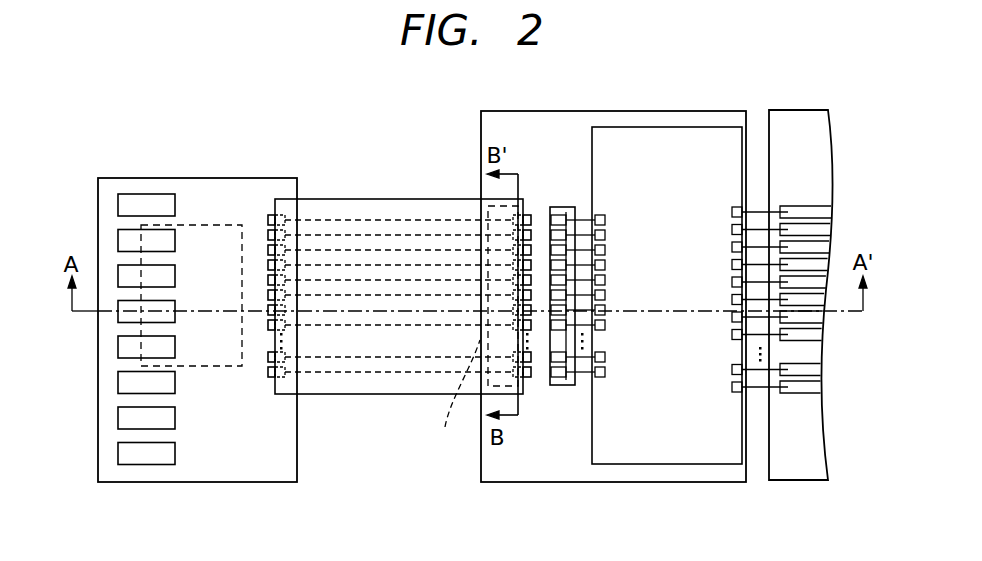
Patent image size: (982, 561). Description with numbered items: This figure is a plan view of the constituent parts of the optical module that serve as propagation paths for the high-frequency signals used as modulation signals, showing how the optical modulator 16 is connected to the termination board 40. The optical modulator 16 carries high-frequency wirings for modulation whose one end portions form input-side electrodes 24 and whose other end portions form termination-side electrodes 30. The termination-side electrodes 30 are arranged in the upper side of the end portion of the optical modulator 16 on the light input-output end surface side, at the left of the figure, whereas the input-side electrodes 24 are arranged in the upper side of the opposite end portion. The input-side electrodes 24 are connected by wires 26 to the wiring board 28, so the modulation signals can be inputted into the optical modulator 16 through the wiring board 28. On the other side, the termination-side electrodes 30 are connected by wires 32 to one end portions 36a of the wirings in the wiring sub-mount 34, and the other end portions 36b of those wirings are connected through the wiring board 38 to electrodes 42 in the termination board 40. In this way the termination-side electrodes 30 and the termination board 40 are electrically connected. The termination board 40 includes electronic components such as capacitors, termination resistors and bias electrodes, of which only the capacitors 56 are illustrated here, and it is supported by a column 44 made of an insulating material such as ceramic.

The optical modulator 16 is at (655, 127).
The input-side electrodes 24 is at (737, 207).
The wires 26 is at (753, 392).
The wiring board 28 is at (807, 482).
The termination-side electrodes 30 is at (604, 213).
The wires 32 is at (583, 380).
The wiring sub-mount 34 is at (480, 340).
The one end portions of wirings 36a is at (560, 208).
The other end portions of wirings 36b is at (488, 212).
The wiring board 38 is at (365, 199).
The termination board 40 is at (167, 178).
The electrodes 42 is at (271, 216).
The column 44 is at (215, 225).
The capacitors 56 is at (131, 200).